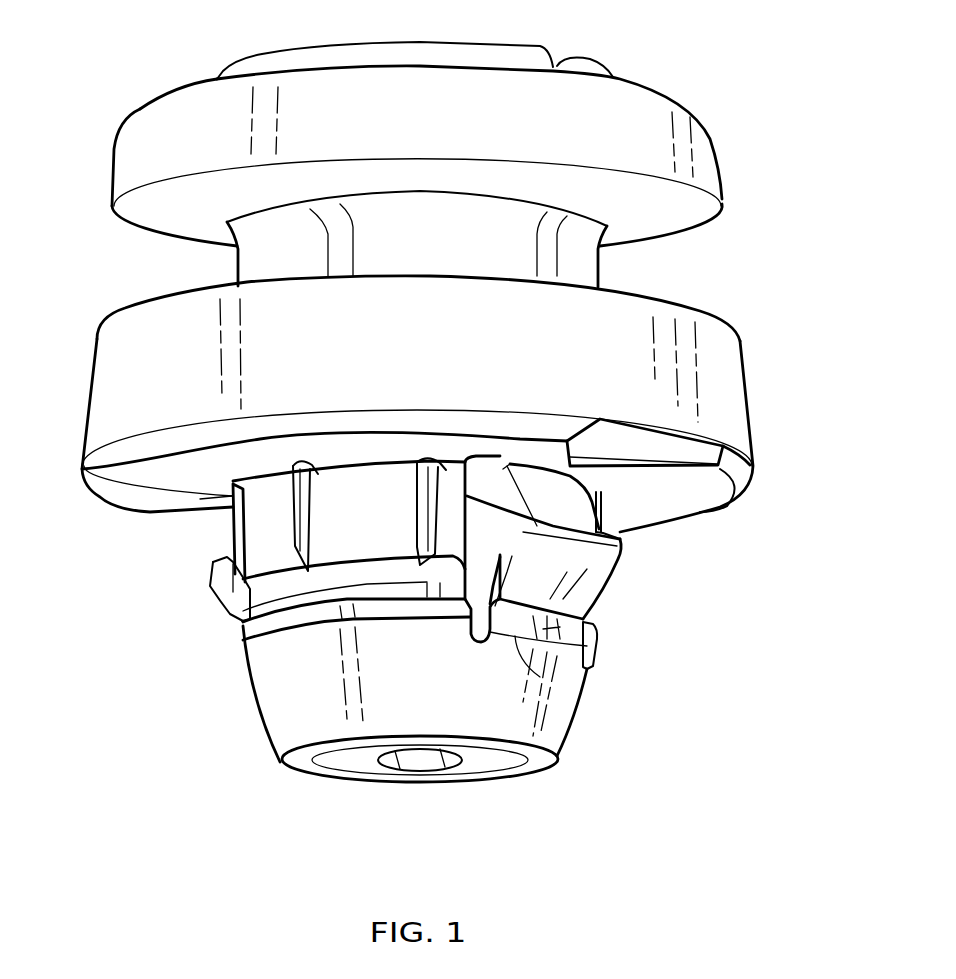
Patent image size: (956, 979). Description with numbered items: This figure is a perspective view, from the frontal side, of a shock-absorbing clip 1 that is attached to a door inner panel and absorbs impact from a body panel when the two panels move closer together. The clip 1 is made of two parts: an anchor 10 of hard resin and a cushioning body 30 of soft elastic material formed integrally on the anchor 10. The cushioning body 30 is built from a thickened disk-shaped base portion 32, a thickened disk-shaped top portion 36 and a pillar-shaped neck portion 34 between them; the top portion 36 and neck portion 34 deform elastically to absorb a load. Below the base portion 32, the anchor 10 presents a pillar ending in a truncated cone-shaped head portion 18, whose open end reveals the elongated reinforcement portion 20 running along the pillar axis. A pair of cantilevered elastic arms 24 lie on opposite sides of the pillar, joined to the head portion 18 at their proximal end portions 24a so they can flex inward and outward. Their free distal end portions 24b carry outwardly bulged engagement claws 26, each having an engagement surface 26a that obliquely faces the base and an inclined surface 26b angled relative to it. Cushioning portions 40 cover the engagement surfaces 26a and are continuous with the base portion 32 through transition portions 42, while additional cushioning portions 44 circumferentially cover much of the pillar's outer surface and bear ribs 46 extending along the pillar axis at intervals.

The clip 1 is at (746, 66).
The anchor 10 is at (186, 711).
The head portion 18 is at (277, 727).
The reinforcement portion 20 is at (420, 763).
The elastic arms 24 is at (233, 610).
The proximal end portions 24a is at (540, 678).
The distal end portions 24b is at (492, 530).
The engagement claws 26 is at (213, 570).
The engagement surfaces 26a is at (587, 515).
The inclined surfaces 26b is at (587, 584).
The cushioning body 30 is at (753, 194).
The base portion 32 is at (120, 370).
The neck portion 34 is at (273, 257).
The top portion 36 is at (652, 122).
The cushioning portions 40 is at (710, 515).
The transition portions 42 is at (592, 457).
The cushioning portions 44 is at (260, 520).
The ribs 46 is at (293, 490).